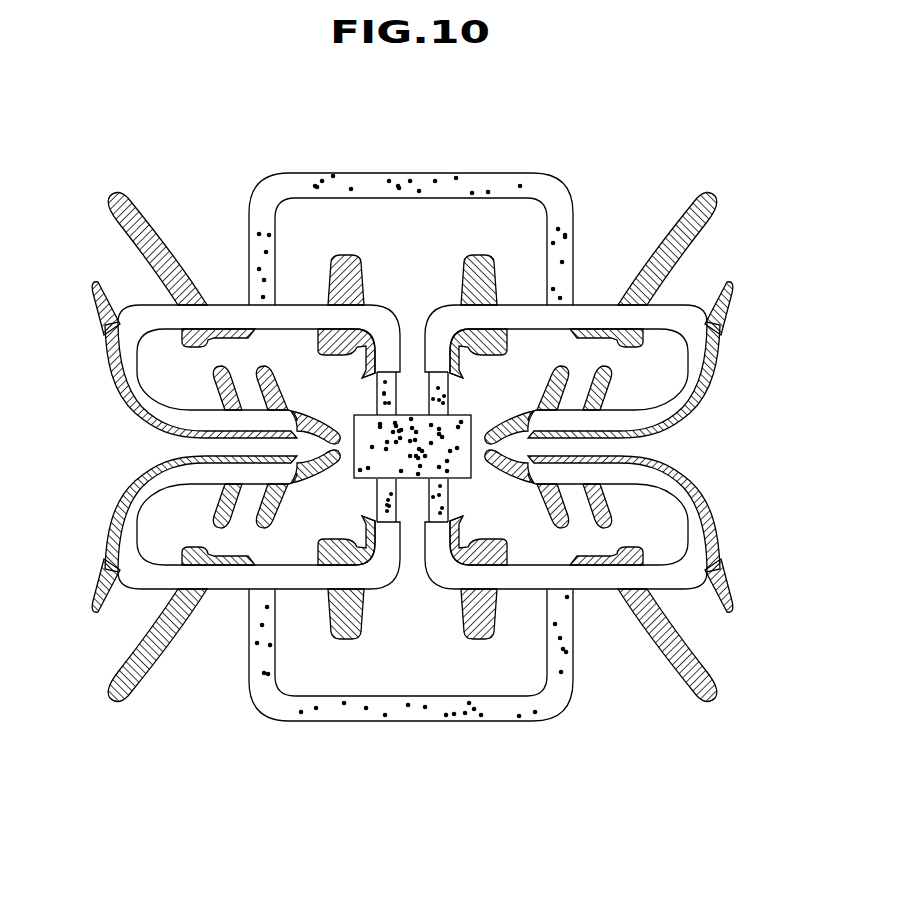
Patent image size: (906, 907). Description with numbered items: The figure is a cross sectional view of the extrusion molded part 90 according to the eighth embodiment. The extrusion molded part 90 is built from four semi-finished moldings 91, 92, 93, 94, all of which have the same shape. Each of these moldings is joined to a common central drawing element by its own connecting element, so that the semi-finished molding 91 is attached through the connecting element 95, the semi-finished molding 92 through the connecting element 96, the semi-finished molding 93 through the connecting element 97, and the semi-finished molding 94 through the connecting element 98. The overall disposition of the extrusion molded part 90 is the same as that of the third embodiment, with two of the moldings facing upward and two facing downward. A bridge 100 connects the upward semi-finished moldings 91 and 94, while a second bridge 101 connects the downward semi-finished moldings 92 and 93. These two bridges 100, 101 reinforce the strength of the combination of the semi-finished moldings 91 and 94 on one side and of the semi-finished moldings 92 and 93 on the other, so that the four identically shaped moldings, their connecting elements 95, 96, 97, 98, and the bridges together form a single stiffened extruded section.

The extrusion molded part 90 is at (418, 161).
The semi-finished molding 91 is at (132, 372).
The semi-finished molding 92 is at (133, 522).
The semi-finished molding 93 is at (693, 518).
The semi-finished molding 94 is at (692, 368).
The connecting element 95 is at (378, 403).
The connecting element 96 is at (378, 492).
The connecting element 97 is at (447, 492).
The connecting element 98 is at (447, 403).
The bridge 100 is at (562, 213).
The bridge 101 is at (563, 677).